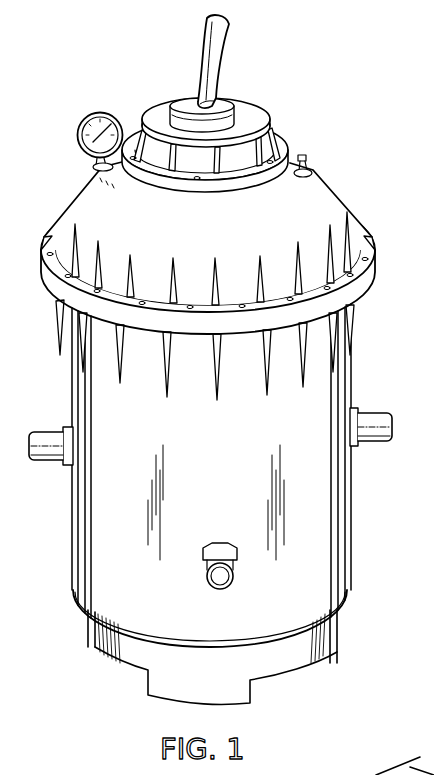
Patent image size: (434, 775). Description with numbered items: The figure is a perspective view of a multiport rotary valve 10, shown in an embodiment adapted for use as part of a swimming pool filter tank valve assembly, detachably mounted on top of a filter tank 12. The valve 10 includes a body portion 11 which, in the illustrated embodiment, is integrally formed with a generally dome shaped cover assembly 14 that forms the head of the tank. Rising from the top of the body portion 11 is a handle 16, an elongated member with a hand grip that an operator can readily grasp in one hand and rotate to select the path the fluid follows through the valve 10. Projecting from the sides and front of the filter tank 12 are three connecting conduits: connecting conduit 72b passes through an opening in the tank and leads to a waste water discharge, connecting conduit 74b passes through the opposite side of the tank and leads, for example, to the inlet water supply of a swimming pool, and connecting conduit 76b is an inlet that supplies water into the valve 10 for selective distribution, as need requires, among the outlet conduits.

The multiport rotary valve 10 is at (288, 128).
The body portion 11 is at (254, 116).
The filter tank 12 is at (352, 486).
The cover assembly 14 is at (336, 204).
The handle 16 is at (236, 41).
The connecting conduit 72b is at (44, 457).
The connecting conduit 74b is at (381, 415).
The connecting conduit 76b is at (210, 584).